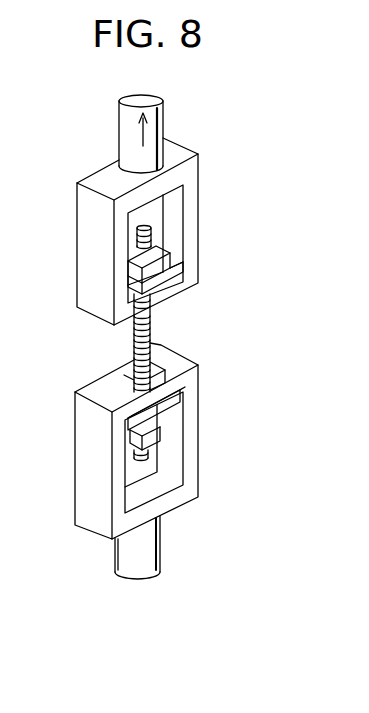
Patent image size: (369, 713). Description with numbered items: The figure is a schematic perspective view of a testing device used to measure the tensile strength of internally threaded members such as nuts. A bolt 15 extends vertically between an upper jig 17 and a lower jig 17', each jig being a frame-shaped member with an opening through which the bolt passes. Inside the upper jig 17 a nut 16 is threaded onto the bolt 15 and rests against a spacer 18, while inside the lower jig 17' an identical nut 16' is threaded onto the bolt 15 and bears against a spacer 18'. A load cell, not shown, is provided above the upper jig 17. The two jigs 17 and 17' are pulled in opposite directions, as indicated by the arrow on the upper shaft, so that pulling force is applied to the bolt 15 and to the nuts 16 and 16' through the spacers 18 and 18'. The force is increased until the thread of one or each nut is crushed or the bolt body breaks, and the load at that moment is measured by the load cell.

The bolt 15 is at (150, 332).
The nut 16 is at (192, 243).
The upper jig 17 is at (113, 231).
The spacer 18 is at (195, 277).
The nut 16' is at (193, 439).
The lower jig 17' is at (106, 441).
The spacer 18' is at (192, 399).